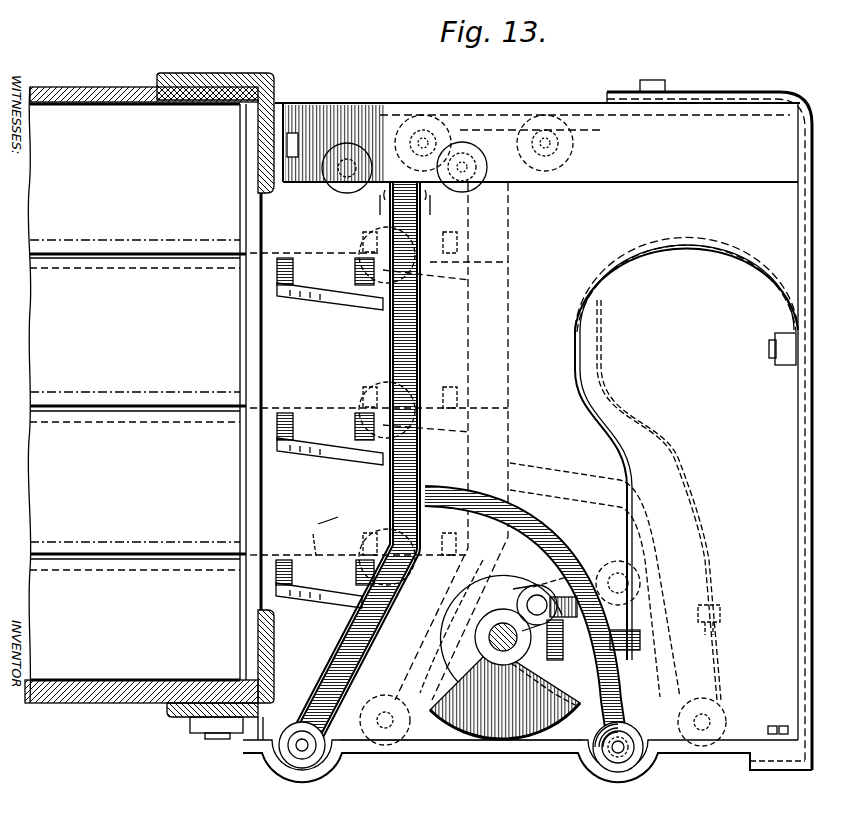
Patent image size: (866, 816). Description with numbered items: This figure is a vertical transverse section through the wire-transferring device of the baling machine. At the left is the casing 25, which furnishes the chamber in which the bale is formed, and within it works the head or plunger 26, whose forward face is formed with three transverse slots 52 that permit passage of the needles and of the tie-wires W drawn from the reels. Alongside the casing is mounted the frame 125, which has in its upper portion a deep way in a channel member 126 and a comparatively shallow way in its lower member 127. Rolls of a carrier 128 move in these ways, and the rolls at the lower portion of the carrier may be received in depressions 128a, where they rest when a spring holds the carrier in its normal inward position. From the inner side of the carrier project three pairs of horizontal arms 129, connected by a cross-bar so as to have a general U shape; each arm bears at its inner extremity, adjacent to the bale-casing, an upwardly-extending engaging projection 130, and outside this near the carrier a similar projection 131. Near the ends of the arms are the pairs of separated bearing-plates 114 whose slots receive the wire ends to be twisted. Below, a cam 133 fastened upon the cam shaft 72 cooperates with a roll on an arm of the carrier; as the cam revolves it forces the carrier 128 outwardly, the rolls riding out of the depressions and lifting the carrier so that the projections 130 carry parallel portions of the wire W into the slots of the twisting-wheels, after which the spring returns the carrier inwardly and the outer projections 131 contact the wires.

The casing 25 is at (98, 703).
The plunger 26 is at (187, 392).
The transverse slots 52 is at (133, 251).
The cam shaft 72 is at (500, 631).
The bearing-plates 114 is at (383, 218).
The frame 125 is at (812, 221).
The channel member 126 is at (530, 345).
The lower member 127 is at (440, 746).
The carrier 128 is at (482, 327).
The depressions 128a is at (328, 758).
The horizontal arms 129 is at (333, 298).
The engaging projection 130 is at (283, 410).
The projections 131 is at (450, 240).
The cam 133 is at (490, 732).
The tie-wires W is at (318, 536).